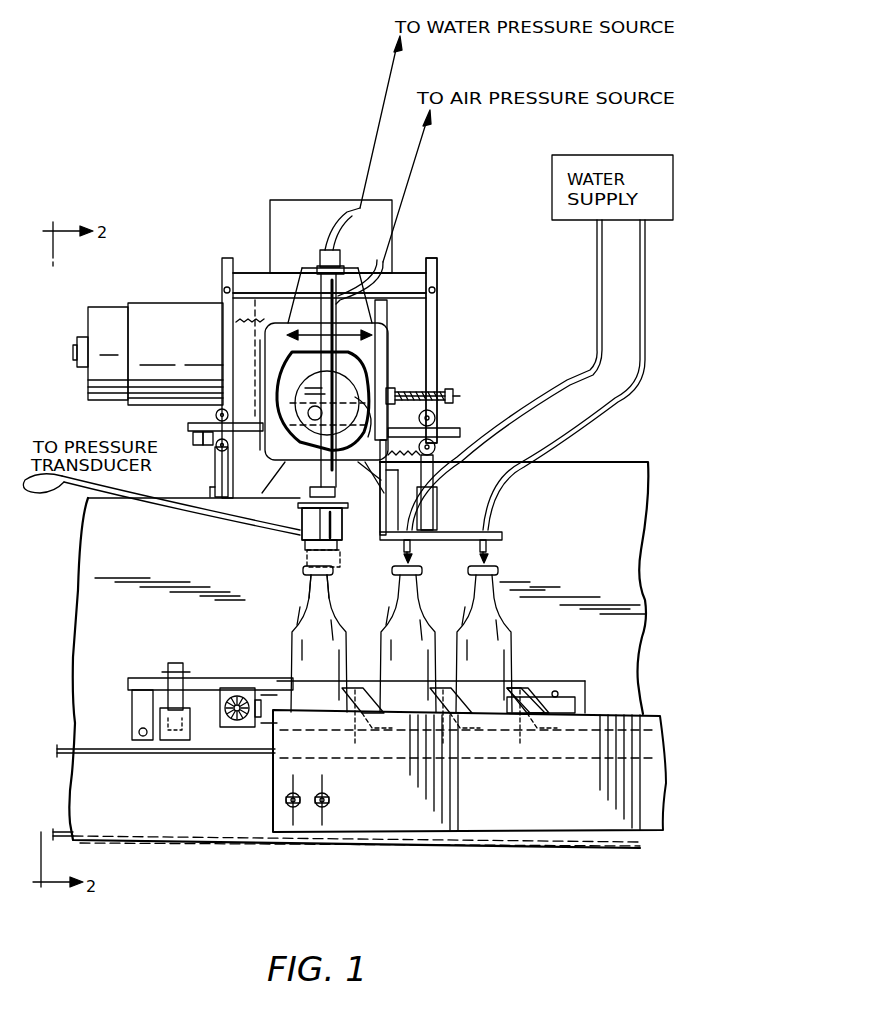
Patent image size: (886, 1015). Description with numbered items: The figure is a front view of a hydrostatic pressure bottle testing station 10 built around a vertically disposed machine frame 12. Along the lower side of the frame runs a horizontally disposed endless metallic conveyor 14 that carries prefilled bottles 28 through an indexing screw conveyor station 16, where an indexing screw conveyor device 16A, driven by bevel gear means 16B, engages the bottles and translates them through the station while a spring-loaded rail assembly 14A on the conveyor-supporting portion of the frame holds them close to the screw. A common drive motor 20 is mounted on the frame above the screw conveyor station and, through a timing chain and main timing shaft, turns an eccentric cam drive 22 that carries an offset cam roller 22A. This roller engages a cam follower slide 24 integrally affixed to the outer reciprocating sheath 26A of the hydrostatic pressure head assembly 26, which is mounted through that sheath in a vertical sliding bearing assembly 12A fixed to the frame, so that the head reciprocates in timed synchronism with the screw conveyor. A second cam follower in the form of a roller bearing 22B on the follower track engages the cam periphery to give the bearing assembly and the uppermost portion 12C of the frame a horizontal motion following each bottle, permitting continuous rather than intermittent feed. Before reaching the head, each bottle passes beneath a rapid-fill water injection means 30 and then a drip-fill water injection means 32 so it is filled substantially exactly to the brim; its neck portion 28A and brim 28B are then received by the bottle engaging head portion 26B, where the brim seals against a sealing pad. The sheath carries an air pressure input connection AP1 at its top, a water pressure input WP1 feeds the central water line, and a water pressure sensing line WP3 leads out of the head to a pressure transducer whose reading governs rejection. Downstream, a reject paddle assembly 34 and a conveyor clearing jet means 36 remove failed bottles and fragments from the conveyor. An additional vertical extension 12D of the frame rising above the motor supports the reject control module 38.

The hydrostatic pressure bottle testing station 10 is at (484, 340).
The machine frame 12 is at (601, 501).
The sliding bearing assembly 12A is at (332, 333).
The uppermost portion of the frame 12C is at (435, 286).
The vertical extension 12D is at (395, 276).
The endless metallic conveyor 14 is at (635, 760).
The spring-loaded rail assembly 14A is at (390, 807).
The indexing screw conveyor station 16 is at (520, 674).
The indexing screw conveyor device 16A is at (527, 692).
The bevel gear means 16B is at (245, 688).
The drive motor 20 is at (181, 364).
The eccentric cam drive 22 is at (340, 390).
The offset cam roller 22A is at (322, 410).
The roller bearing 22B is at (430, 384).
The cam follower slide 24 is at (385, 438).
The hydrostatic pressure head assembly 26 is at (300, 540).
The outer reciprocating sheath 26A is at (320, 288).
The bottle engaging head portion 26B is at (338, 530).
The bottle 28 is at (321, 659).
The neck portion 28A is at (308, 590).
The brim 28B is at (332, 560).
The rapid-fill water injection means 30 is at (492, 515).
The drip-fill water injection means 32 is at (415, 498).
The reject paddle assembly 34 is at (173, 663).
The conveyor clearing jet means 36 is at (143, 736).
The reject control module 38 is at (357, 215).
The water pressure input WP1 is at (336, 198).
The water pressure sensing line WP3 is at (178, 520).
The air pressure input connection AP1 is at (374, 268).